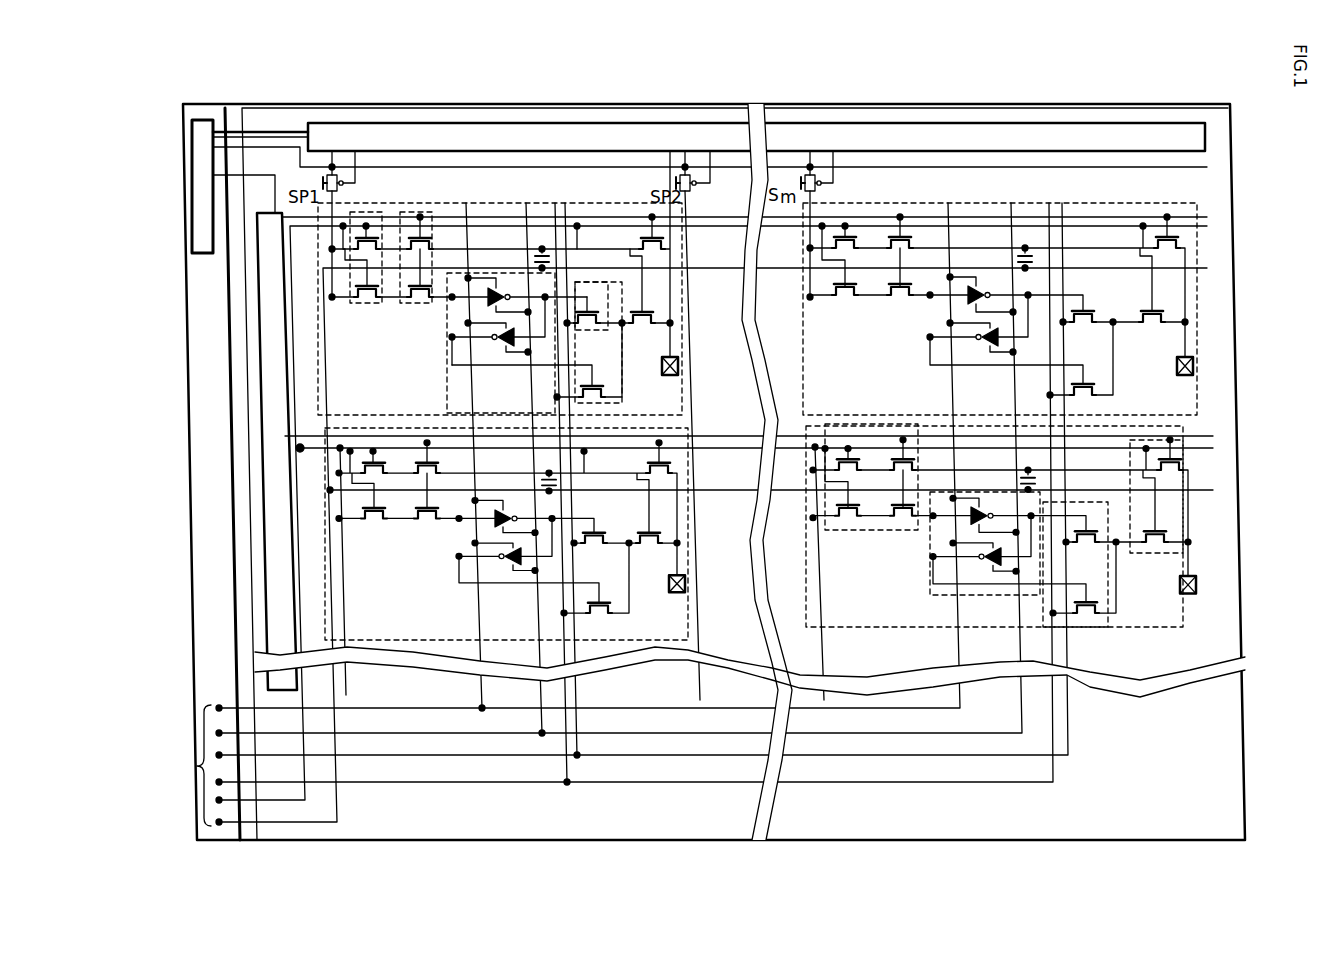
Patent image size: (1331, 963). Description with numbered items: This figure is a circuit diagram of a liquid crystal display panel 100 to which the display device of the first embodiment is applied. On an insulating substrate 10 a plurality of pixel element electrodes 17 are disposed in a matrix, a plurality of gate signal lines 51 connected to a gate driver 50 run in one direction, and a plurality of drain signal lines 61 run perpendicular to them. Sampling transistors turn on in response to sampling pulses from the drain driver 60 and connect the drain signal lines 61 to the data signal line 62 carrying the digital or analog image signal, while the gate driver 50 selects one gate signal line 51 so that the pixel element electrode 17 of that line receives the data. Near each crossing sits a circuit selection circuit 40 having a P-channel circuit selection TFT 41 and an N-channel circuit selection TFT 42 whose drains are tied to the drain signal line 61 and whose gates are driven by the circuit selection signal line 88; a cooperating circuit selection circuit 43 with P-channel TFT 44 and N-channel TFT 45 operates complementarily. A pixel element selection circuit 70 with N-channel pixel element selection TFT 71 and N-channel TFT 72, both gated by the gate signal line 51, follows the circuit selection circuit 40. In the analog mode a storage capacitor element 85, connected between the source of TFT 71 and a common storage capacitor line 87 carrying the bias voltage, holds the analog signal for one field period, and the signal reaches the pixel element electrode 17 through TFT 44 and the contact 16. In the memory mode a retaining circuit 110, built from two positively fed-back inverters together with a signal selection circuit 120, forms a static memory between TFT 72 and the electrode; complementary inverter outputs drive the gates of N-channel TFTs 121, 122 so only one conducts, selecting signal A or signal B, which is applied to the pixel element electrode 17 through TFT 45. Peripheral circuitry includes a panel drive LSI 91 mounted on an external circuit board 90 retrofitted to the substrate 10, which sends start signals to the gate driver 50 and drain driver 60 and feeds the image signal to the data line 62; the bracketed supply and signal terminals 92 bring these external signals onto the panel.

The insulating substrate 10 is at (884, 104).
The contact 16 is at (682, 366).
The pixel element electrode 17 is at (686, 408).
The circuit selection circuit 40 is at (384, 304).
The P-channel circuit selection TFT 41 is at (372, 232).
The N-channel circuit selection TFT 42 is at (367, 303).
The circuit selection circuit 43 is at (640, 208).
The P-channel circuit selection TFT 44 is at (639, 238).
The N-channel circuit selection TFT 45 is at (662, 310).
The gate driver 50 is at (262, 420).
The gate signal line 51 is at (1207, 217).
The drain driver 60 is at (642, 122).
The drain signal line 61 is at (345, 572).
The data signal line 62 is at (1207, 167).
The pixel element selection circuit 70 is at (432, 304).
The pixel element selection TFT 71 is at (434, 241).
The N-channel TFT 72 is at (421, 303).
The storage capacitor element 85 is at (542, 245).
The common storage capacitor line 87 is at (1207, 268).
The circuit selection signal line 88 is at (1207, 226).
The external circuit board 90 is at (188, 319).
The panel drive LSI 91 is at (197, 183).
The signal terminals 92 is at (620, 514).
The liquid crystal display panel 100 is at (742, 104).
The retaining circuit 110 is at (449, 405).
The signal selection circuit 120 is at (607, 404).
The N-channel TFT 121 is at (594, 300).
The N-channel TFT 122 is at (597, 386).